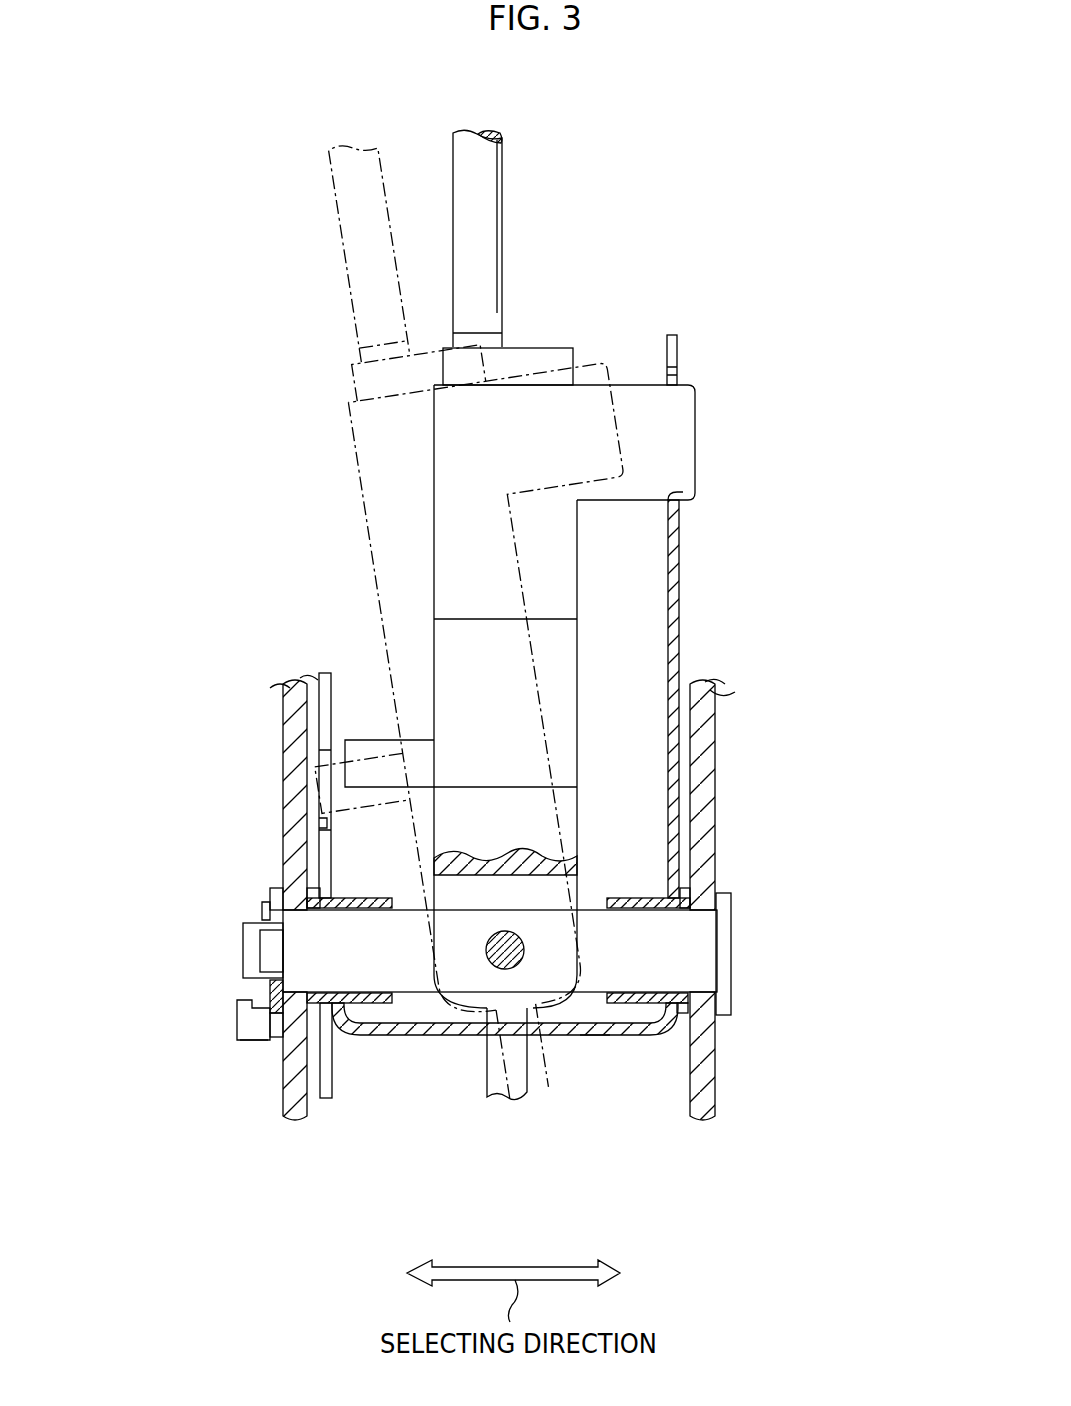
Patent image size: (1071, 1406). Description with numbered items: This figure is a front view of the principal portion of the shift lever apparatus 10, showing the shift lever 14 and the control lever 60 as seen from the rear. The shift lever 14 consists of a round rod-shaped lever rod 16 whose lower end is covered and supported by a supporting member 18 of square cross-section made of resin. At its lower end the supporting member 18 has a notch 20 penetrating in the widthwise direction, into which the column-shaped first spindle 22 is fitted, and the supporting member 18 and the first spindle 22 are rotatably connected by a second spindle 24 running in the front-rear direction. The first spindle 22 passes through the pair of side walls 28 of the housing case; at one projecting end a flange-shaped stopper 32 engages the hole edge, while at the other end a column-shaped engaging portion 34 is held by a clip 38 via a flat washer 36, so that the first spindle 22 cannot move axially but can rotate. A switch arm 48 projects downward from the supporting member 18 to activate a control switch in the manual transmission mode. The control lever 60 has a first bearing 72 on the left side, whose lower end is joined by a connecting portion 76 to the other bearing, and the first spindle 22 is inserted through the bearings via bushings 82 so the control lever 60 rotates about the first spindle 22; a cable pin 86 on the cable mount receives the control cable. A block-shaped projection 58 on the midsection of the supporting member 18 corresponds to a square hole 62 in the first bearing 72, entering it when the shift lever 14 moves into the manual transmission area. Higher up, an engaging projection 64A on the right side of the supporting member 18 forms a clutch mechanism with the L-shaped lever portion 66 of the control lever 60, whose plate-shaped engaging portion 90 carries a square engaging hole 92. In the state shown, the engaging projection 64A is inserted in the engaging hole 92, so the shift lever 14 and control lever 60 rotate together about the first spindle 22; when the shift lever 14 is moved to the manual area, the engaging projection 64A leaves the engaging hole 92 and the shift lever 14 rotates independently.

The shift lever apparatus 10 is at (617, 388).
The shift lever 14 is at (510, 628).
The lever rod 16 is at (485, 210).
The supporting member 18 is at (552, 645).
The notch 20 is at (520, 876).
The first spindle 22 is at (675, 950).
The second spindle 24 is at (486, 947).
The side walls 28 is at (290, 712).
The stopper 32 is at (725, 893).
The engaging portion 34 is at (250, 938).
The flat washer 36 is at (270, 893).
The clip 38 is at (262, 993).
The switch arm 48 is at (487, 1070).
The projection 58 is at (365, 748).
The control lever 60 is at (602, 1058).
The hole 62 is at (327, 823).
The engaging projection 64A is at (607, 372).
The lever portion 66 is at (695, 633).
The first bearing 72 is at (325, 865).
The connecting portion 76 is at (452, 1030).
The bushings 82 is at (637, 905).
The cable pin 86 is at (250, 1030).
The engaging portion 90 is at (677, 355).
The engaging hole 92 is at (676, 491).